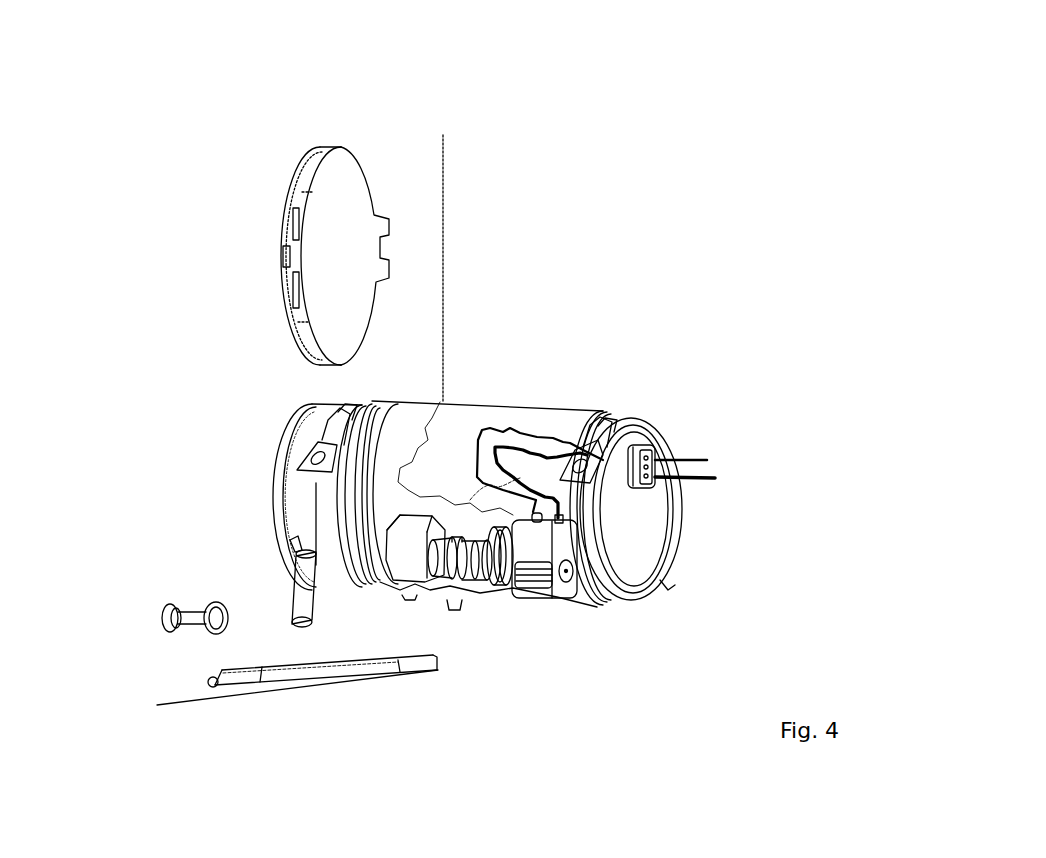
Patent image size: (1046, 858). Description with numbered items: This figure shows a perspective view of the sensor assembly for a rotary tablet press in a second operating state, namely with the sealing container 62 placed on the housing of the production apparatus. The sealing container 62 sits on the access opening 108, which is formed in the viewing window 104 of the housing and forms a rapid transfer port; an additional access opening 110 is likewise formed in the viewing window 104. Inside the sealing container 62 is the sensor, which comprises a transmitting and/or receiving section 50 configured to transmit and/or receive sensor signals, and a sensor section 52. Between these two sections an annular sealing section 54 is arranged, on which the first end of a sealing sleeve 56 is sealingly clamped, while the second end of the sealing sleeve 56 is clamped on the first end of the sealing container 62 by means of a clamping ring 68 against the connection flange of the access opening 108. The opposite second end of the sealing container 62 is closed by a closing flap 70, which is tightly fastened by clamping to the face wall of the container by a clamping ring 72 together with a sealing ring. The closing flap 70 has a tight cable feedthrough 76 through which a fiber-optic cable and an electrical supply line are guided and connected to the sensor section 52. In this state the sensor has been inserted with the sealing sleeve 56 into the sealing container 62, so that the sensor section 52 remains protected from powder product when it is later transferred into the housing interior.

The transmitting and/or receiving section 50 is at (447, 567).
The sensor section 52 is at (537, 588).
The annular sealing section 54 is at (507, 577).
The sealing sleeve 56 is at (400, 465).
The sealing container 62 is at (540, 411).
The clamping ring 68 is at (343, 570).
The closing flap 70 is at (628, 562).
The clamping ring 72 is at (650, 419).
The cable feedthrough 76 is at (645, 490).
The viewing window 104 is at (430, 193).
The access opening 108 is at (282, 458).
The additional access opening 110 is at (347, 165).